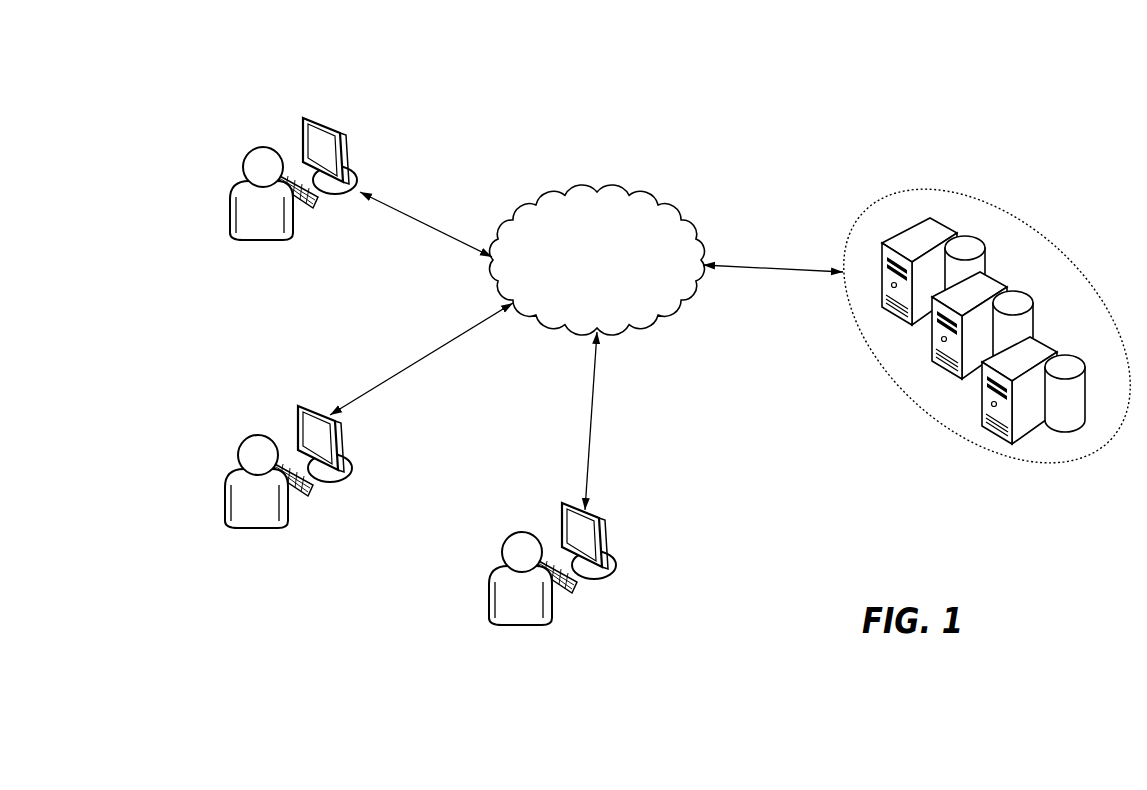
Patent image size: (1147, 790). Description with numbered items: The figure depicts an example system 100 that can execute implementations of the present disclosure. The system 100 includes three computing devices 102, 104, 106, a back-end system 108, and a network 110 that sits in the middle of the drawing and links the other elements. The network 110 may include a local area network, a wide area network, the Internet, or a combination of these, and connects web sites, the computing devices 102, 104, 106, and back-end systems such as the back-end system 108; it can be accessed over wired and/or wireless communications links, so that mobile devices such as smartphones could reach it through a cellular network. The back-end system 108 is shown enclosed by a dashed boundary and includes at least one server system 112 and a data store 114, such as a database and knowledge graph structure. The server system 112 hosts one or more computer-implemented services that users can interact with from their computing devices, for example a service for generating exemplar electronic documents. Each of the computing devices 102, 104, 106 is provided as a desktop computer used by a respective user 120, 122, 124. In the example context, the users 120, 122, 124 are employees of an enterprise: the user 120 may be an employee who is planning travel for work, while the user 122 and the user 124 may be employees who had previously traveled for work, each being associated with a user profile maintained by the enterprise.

The system 100 is at (750, 40).
The computing device 102 is at (350, 157).
The computing device 104 is at (347, 443).
The computing device 106 is at (610, 541).
The back-end system 108 is at (969, 326).
The network 110 is at (593, 192).
The server system 112 is at (912, 228).
The data store 114 is at (965, 237).
The user 120 is at (252, 146).
The user 122 is at (250, 436).
The user 124 is at (513, 533).